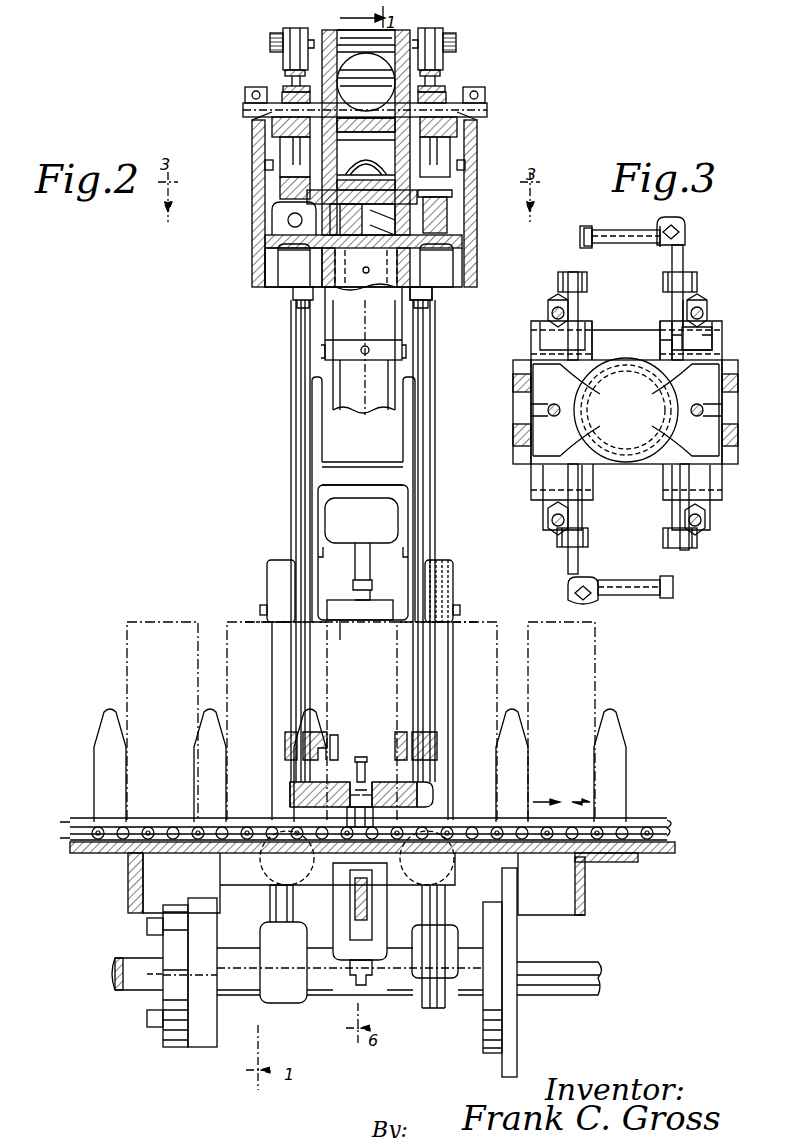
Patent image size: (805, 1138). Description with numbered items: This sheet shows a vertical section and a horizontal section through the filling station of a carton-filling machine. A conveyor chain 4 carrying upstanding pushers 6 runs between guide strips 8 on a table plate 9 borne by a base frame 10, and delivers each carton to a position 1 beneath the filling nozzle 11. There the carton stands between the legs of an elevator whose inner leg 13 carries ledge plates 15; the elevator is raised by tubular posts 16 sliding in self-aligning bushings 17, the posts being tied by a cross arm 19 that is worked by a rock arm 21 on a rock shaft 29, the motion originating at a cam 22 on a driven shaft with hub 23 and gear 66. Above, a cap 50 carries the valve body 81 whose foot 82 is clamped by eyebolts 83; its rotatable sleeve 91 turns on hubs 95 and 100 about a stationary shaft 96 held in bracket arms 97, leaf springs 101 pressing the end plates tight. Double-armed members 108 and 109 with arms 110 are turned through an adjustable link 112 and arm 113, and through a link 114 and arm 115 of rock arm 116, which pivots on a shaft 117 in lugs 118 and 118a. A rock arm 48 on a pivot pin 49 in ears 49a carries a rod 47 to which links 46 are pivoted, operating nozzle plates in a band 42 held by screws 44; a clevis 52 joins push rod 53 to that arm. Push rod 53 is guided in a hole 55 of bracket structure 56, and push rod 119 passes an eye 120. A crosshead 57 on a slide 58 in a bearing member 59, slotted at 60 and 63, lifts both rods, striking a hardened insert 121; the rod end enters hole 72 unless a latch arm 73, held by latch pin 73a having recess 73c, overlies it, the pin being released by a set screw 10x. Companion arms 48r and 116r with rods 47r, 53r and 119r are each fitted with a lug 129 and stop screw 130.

In FIG. 2, the bottle station / section line 1 is at (127, 662).
In FIG. 2, the conveyor chain 4 is at (168, 798).
In FIG. 2, the pushers 6 is at (94, 768).
In FIG. 2, the guide strips 8 is at (60, 830).
In FIG. 2, the table plate 9 is at (675, 848).
In FIG. 2, the base frame 10 is at (312, 467).
In FIG. 2, the plunger stem 10x is at (370, 592).
In FIG. 2, the filling spout or nozzle 11 is at (410, 372).
In FIG. 2, the inner leg 13 is at (382, 620).
In FIG. 2, the ledge plates 15 is at (340, 632).
In FIG. 2, the tubular posts 16 is at (272, 703).
In FIG. 2, the self-aligning bearing bushings 17 is at (262, 885).
In FIG. 2, the cross arm 19 is at (318, 995).
In FIG. 2, the rock arm 21 is at (372, 978).
In FIG. 2, the cam 22 is at (217, 930).
In FIG. 2, the hub shaft 23 is at (175, 1038).
In FIG. 2, the rock shaft 29 is at (553, 990).
In FIG. 2, the cylinder 42 is at (338, 348).
In FIG. 2, the screws 44 is at (366, 346).
In FIG. 2, the links 46 is at (296, 330).
In FIG. 3, the links 46 is at (588, 226).
In FIG. 3, the rod 47 is at (630, 228).
In FIG. 3, the bolt 47r is at (628, 596).
In FIG. 3, the rock arm 48 is at (684, 240).
In FIG. 3, the rock arm 48r is at (578, 526).
In FIG. 3, the pivot pin 49 is at (680, 330).
In FIG. 3, the ears 49a is at (685, 306).
In FIG. 2, the cap 50 is at (265, 265).
In FIG. 3, the cap 50 is at (650, 362).
In FIG. 2, the clevis 52 is at (432, 296).
In FIG. 3, the clevis 52 is at (662, 274).
In FIG. 2, the push rod 53 is at (430, 478).
In FIG. 3, the push rod 53 is at (684, 275).
In FIG. 3, the actuating rod 53r is at (557, 540).
In FIG. 2, the guide hole 55 is at (338, 738).
In FIG. 2, the bracket structure 56 is at (285, 750).
In FIG. 2, the cross-head 57 is at (366, 760).
In FIG. 2, the slide 58 is at (347, 813).
In FIG. 2, the bearing member 59 is at (387, 895).
In FIG. 2, the slot 60 is at (300, 930).
In FIG. 2, the slot 63 is at (350, 890).
In FIG. 2, the gear / bearing 66 is at (517, 950).
In FIG. 2, the hole 72 is at (428, 787).
In FIG. 2, the latch arm 73 is at (376, 760).
In FIG. 2, the latch pin 73a is at (356, 782).
In FIG. 2, the recess 73c is at (350, 780).
In FIG. 2, the valve body 81 is at (381, 34).
In FIG. 2, the foot 82 is at (280, 190).
In FIG. 2, the eyebolts 83 is at (278, 218).
In FIG. 3, the eyebolts 83 is at (548, 408).
In FIG. 2, the cylindrical wall 91 is at (366, 82).
In FIG. 2, the bearing hub 95 is at (282, 90).
In FIG. 2, the shaft 96 is at (487, 108).
In FIG. 2, the bracket arms 97 is at (265, 165).
In FIG. 3, the bracket arms 97 is at (514, 414).
In FIG. 2, the bearing hub 100 is at (448, 98).
In FIG. 2, the leaf springs 101 is at (248, 105).
In FIG. 2, the double-armed member 108 is at (448, 88).
In FIG. 2, the double-armed member 109 is at (292, 84).
In FIG. 2, the arms 110 is at (284, 42).
In FIG. 2, the adjustable link 112 is at (446, 72).
In FIG. 2, the adjustable length arm 113 is at (452, 188).
In FIG. 3, the adjustable length arm 113 is at (712, 345).
In FIG. 2, the link 114 is at (287, 72).
In FIG. 2, the arm 115 is at (280, 152).
In FIG. 3, the arm 115 is at (540, 335).
In FIG. 3, the rock arm 116 is at (578, 290).
In FIG. 3, the rock arm 116r is at (690, 530).
In FIG. 3, the pivot shaft 117 is at (531, 350).
In FIG. 3, the lug 118 is at (531, 340).
In FIG. 3, the lug 118a is at (592, 322).
In FIG. 2, the actuating push rod 119 is at (291, 507).
In FIG. 3, the actuating push rod 119 is at (560, 274).
In FIG. 3, the actuating rod 119r is at (696, 542).
In FIG. 2, the eye 120 is at (285, 737).
In FIG. 2, the hardened insert 121 is at (290, 787).
In FIG. 3, the lug 129 is at (548, 311).
In FIG. 3, the adjustable stop screw 130 is at (554, 297).